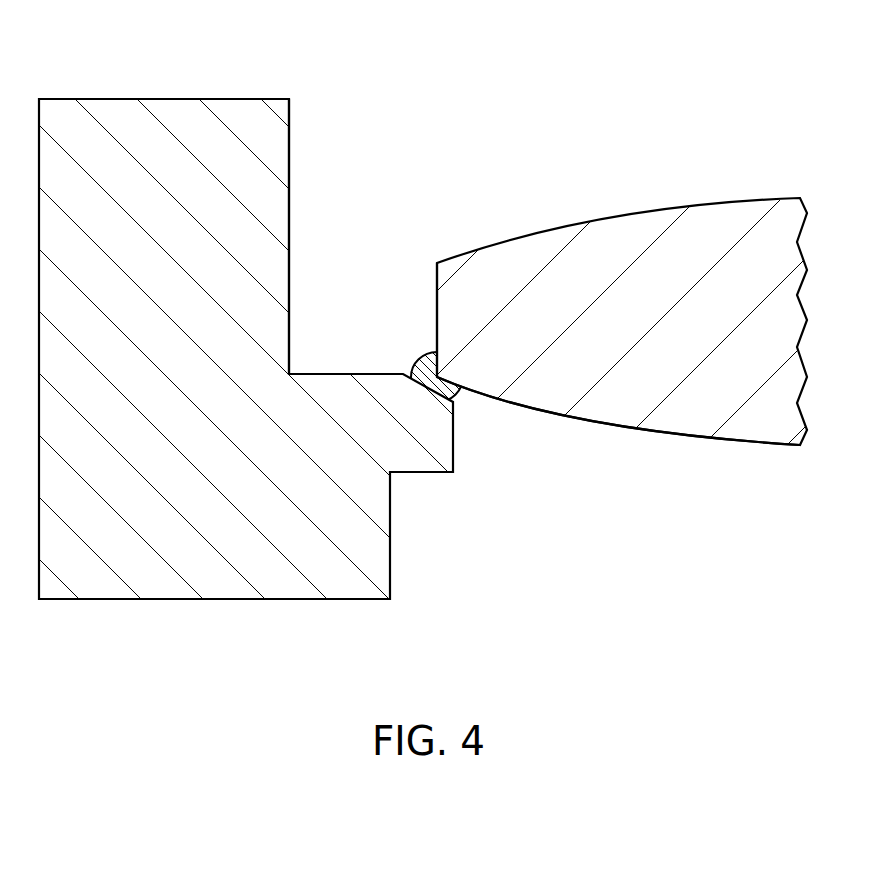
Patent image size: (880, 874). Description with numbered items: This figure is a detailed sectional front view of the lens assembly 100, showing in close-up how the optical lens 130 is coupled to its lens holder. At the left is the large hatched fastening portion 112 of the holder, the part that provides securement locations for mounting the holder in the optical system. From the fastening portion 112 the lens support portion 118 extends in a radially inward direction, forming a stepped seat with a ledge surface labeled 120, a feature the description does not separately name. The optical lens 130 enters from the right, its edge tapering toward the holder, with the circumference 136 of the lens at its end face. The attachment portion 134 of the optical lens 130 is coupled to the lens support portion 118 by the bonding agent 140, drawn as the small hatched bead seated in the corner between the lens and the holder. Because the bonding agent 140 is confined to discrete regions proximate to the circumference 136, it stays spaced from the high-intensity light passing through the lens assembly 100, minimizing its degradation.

The lens assembly 100 is at (440, 303).
The fastening portion 112 is at (440, 321).
The lens support portion 118 is at (308, 364).
The ledge surface 120 is at (338, 373).
The optical lens 130 is at (579, 288).
The attachment portion 134 is at (527, 407).
The circumference 136 is at (437, 275).
The bonding agent 140 is at (427, 357).